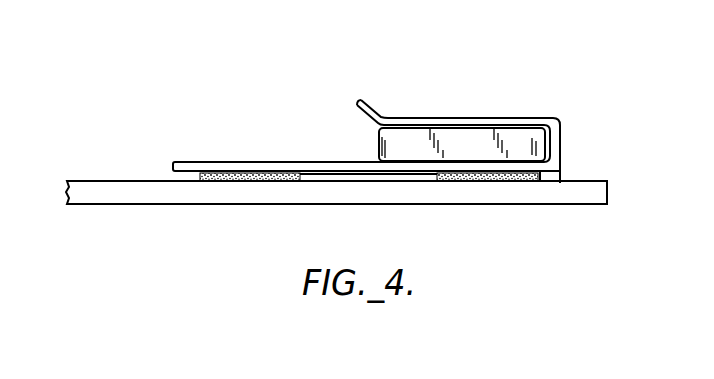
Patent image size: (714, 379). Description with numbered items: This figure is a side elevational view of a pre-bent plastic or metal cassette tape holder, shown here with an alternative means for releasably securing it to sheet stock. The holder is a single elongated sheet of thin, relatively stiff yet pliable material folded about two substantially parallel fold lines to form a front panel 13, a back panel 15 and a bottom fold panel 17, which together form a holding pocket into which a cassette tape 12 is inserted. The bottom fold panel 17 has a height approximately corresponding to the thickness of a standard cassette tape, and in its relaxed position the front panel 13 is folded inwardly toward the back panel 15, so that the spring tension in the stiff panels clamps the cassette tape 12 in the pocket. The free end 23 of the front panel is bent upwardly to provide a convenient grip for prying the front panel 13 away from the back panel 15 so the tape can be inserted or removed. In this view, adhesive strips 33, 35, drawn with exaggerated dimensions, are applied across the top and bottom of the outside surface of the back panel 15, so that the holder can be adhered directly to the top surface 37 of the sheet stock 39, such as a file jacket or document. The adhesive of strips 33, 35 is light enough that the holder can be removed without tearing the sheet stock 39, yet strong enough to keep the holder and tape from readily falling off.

The cassette tape 12 is at (527, 132).
The front panel 13 is at (445, 115).
The back panel 15 is at (410, 174).
The bottom fold panel 17 is at (561, 148).
The free end of the front panel 23 is at (380, 113).
The adhesive strip 33 is at (224, 176).
The adhesive strip 35 is at (490, 174).
The top surface of the sheet stock 37 is at (134, 181).
The sheet stock 39 is at (155, 195).